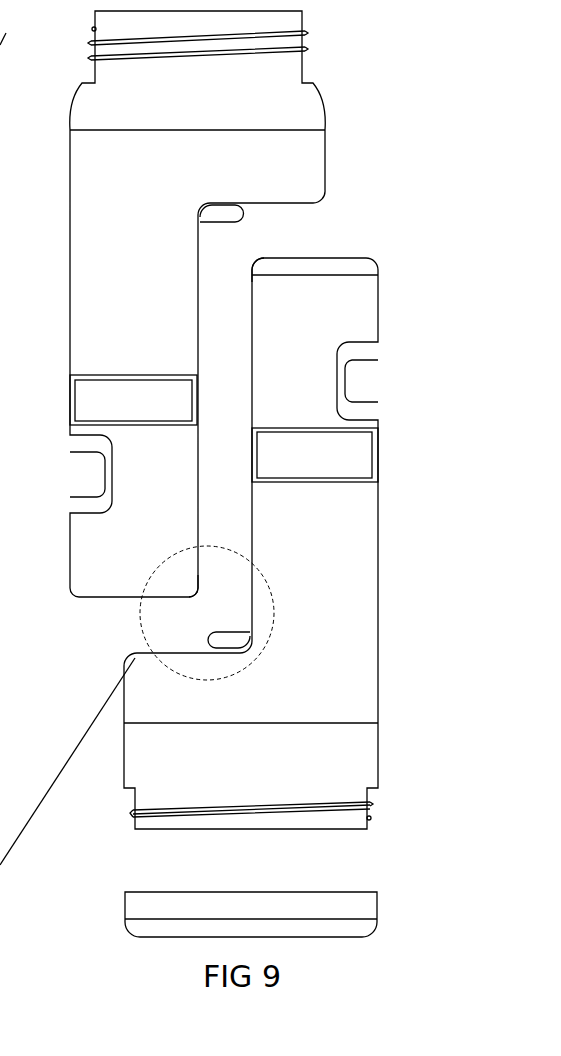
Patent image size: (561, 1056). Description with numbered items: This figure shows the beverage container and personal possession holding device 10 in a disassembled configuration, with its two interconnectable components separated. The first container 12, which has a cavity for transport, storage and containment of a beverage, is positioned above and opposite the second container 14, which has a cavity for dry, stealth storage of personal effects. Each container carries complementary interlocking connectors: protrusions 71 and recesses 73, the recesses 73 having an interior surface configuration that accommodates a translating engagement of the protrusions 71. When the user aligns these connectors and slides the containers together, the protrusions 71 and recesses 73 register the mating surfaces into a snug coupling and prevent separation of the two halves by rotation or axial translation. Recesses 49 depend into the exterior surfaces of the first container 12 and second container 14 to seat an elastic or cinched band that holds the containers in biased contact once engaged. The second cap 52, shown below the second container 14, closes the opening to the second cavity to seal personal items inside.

The beverage container and personal possession holding device 10 is at (397, 68).
The first container 12 is at (72, 110).
The second container 14 is at (360, 632).
The recesses 49 is at (93, 393).
The second cap 52 is at (362, 903).
The protrusions 71 is at (236, 220).
The recesses 73 is at (255, 283).